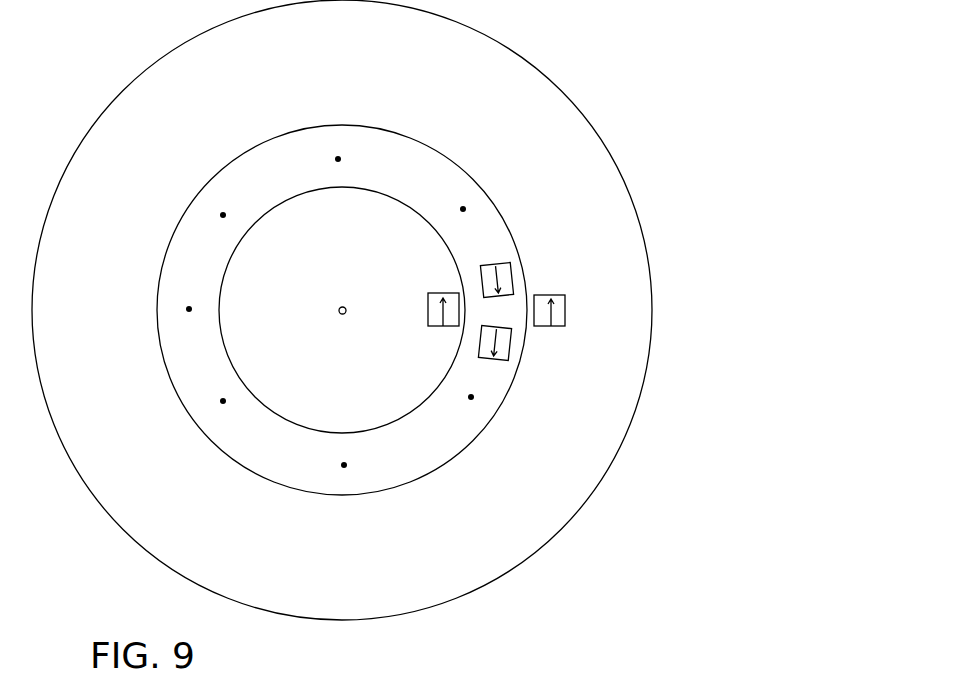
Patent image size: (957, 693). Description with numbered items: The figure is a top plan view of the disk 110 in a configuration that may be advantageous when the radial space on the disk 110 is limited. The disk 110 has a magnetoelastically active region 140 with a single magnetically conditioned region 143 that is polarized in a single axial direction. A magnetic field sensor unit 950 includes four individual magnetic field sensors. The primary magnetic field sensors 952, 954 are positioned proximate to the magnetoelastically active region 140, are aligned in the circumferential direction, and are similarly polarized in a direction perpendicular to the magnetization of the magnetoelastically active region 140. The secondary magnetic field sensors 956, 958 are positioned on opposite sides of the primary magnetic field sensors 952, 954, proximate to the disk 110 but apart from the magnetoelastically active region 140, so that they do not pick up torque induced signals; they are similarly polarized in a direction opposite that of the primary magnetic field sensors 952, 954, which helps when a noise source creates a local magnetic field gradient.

The disk 110 is at (527, 33).
The magnetoelastically active region 140 is at (510, 200).
The magnetically conditioned region 143 is at (418, 443).
The magnetic field sensor unit 950 is at (500, 317).
The primary magnetic field sensor 952 is at (488, 274).
The primary magnetic field sensor 954 is at (498, 346).
The secondary magnetic field sensor 956 is at (436, 312).
The secondary magnetic field sensor 958 is at (548, 312).